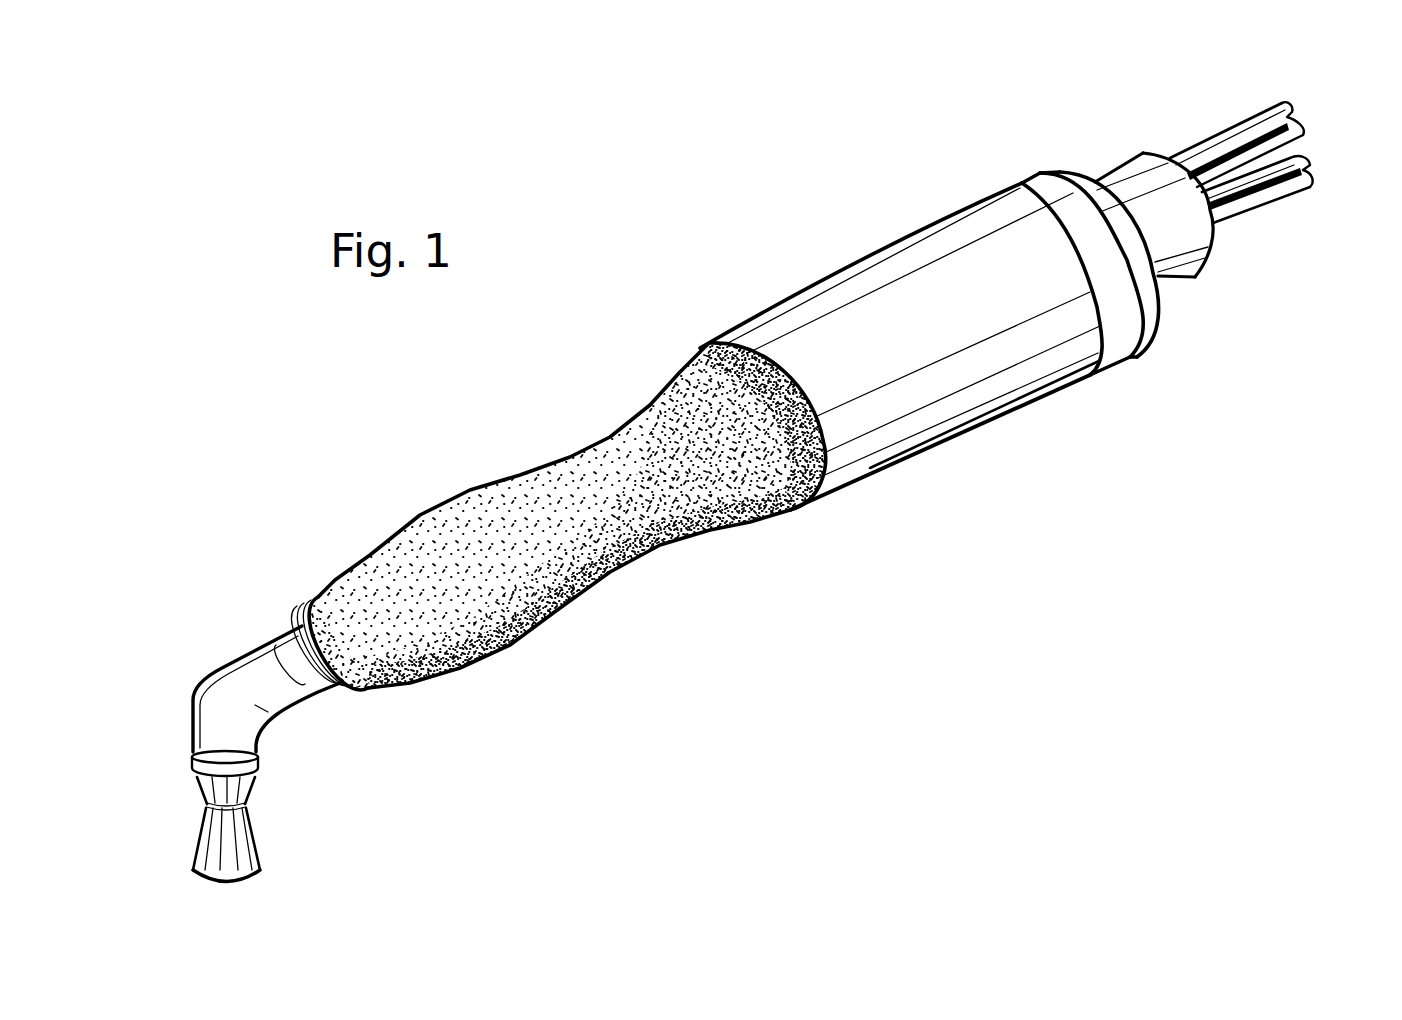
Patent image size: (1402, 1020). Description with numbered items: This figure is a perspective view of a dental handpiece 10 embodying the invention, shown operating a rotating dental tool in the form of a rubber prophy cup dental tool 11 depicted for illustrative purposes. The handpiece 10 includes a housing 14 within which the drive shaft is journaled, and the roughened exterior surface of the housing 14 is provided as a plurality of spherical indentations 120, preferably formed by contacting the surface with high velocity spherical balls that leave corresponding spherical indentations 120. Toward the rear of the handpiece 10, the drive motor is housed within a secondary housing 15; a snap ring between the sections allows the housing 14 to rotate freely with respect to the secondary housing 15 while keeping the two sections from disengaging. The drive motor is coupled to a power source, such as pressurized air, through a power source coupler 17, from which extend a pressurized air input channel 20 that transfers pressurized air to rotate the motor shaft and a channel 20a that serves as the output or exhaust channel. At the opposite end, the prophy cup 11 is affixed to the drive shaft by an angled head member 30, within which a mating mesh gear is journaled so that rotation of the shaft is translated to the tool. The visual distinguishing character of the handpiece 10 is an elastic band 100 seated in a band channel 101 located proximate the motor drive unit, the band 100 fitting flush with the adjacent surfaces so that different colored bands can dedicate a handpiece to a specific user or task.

The handpiece 10 is at (731, 212).
The rubber prophy cup dental tool 11 is at (207, 846).
The housing 14 is at (662, 548).
The secondary housing 15 is at (977, 398).
The power source coupler 17 is at (1213, 253).
The pressurized air input channel 20 is at (1250, 197).
The output or exhaust channel 20a is at (1232, 140).
The angled head member 30 is at (270, 720).
The elastic band 100 is at (1107, 333).
The band channel 101 is at (1157, 320).
The spherical indentations 120 is at (510, 648).